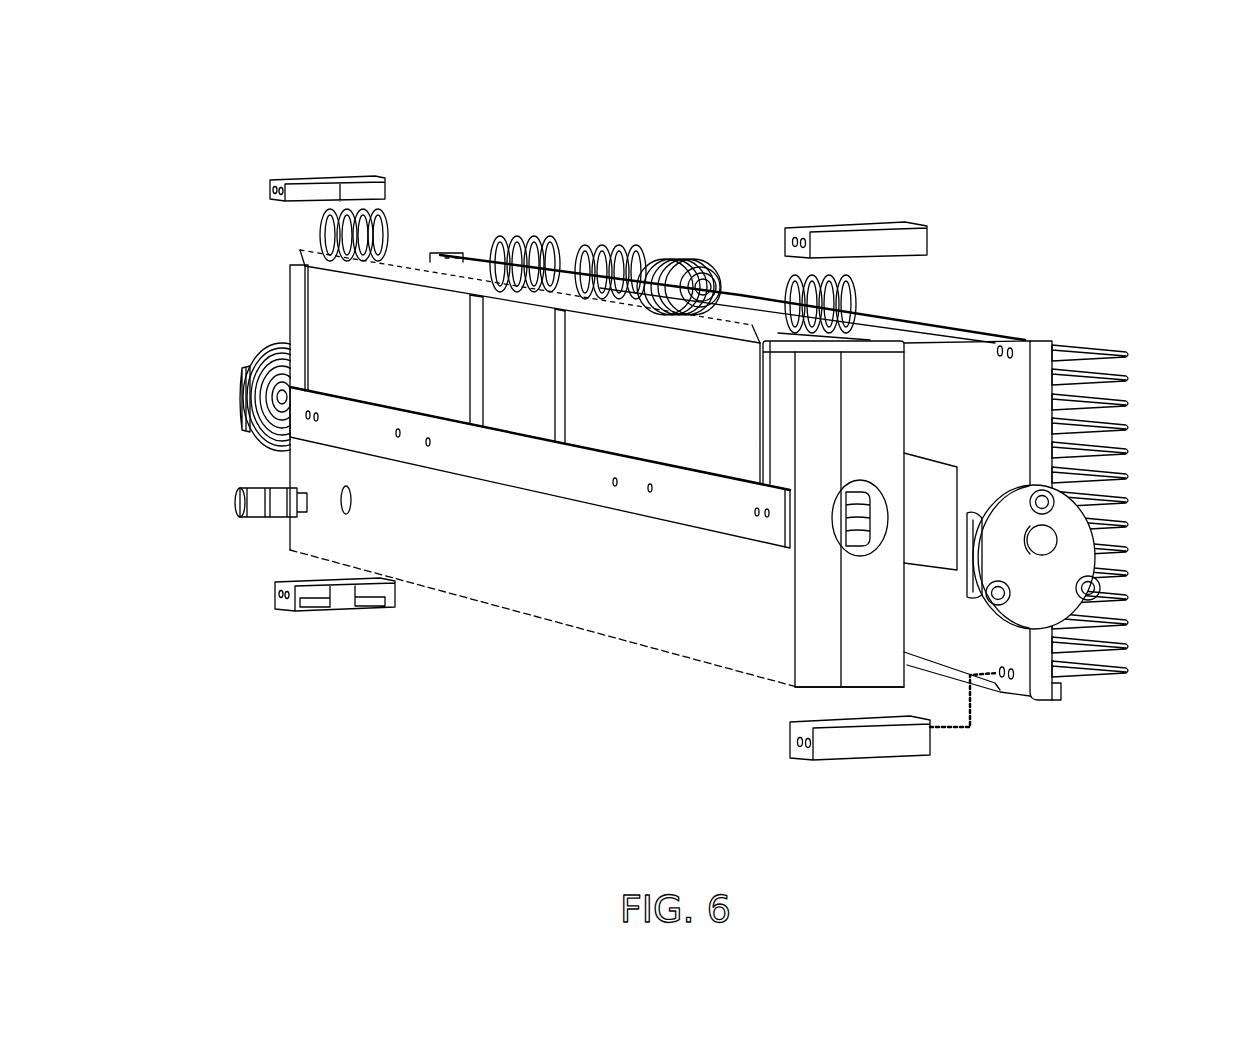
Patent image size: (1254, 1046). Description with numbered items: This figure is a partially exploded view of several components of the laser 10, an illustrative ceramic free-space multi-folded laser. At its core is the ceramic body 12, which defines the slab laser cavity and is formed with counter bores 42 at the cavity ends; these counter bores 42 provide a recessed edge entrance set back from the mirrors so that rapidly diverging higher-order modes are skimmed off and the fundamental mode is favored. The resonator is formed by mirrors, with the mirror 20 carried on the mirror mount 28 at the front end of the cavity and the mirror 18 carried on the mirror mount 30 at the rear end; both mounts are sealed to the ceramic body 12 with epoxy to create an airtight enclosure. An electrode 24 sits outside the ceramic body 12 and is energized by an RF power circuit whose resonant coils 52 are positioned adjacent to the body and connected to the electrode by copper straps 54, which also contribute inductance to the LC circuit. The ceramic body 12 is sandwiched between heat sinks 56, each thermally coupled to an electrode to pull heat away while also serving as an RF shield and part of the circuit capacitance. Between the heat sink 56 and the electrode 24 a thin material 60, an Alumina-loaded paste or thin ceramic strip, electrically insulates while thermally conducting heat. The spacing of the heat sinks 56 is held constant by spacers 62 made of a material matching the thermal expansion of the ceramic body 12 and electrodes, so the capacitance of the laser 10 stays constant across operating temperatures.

The laser 10 is at (1065, 203).
The ceramic body 12 is at (585, 572).
The mirror 18 is at (282, 392).
The mirror 20 is at (1045, 535).
The electrode 24 is at (690, 493).
The mirror mount 28 is at (1060, 583).
The mirror mount 30 is at (242, 407).
The counter bore 42 is at (843, 540).
The resonant coil 52 is at (608, 247).
The copper strap 54 is at (558, 418).
The heat sink 56 is at (1018, 337).
The thin material 60 is at (928, 495).
The spacer 62 is at (275, 195).